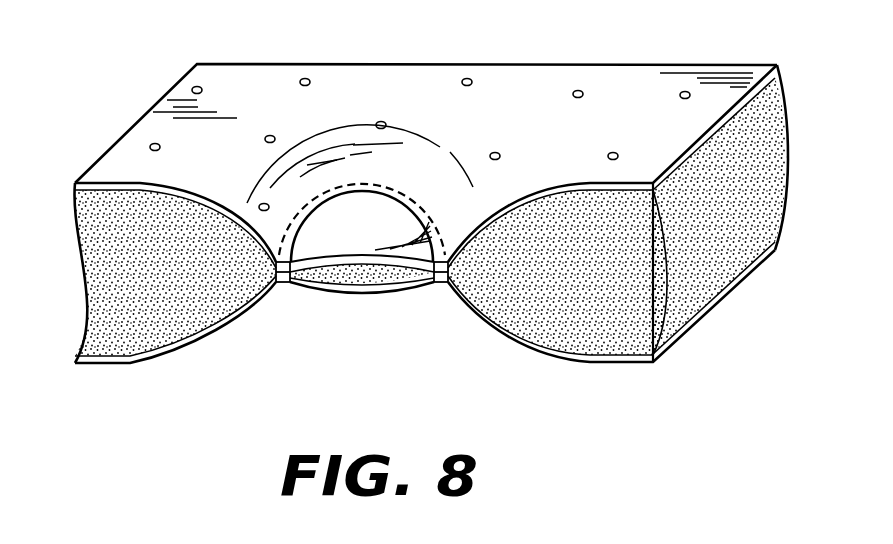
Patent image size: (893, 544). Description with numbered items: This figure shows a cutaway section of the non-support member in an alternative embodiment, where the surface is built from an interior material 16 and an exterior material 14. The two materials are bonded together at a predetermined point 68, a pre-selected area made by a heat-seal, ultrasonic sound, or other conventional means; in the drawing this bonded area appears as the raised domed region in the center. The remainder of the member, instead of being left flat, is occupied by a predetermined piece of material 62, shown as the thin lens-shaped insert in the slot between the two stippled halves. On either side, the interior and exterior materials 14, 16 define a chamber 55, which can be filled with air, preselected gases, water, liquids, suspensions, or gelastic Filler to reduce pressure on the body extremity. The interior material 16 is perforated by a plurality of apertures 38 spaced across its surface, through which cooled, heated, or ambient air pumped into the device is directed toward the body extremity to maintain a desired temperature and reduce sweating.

The exterior material 14 is at (623, 361).
The interior material 16 is at (628, 183).
The apertures 38 is at (269, 134).
The chamber 55 is at (181, 289).
The predetermined piece of material 62 is at (364, 276).
The predetermined point 68 is at (350, 190).